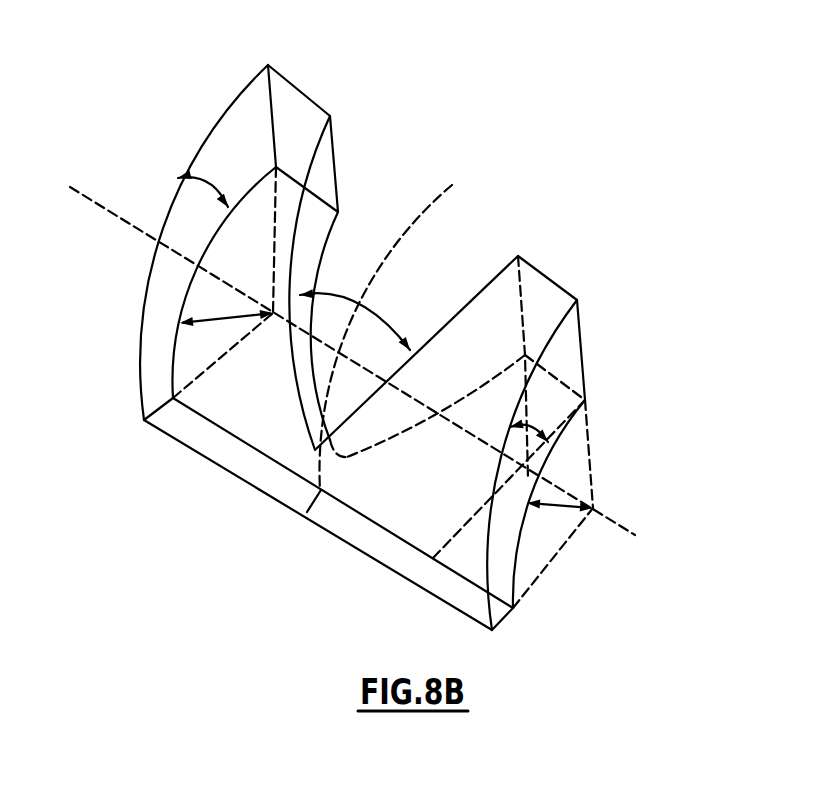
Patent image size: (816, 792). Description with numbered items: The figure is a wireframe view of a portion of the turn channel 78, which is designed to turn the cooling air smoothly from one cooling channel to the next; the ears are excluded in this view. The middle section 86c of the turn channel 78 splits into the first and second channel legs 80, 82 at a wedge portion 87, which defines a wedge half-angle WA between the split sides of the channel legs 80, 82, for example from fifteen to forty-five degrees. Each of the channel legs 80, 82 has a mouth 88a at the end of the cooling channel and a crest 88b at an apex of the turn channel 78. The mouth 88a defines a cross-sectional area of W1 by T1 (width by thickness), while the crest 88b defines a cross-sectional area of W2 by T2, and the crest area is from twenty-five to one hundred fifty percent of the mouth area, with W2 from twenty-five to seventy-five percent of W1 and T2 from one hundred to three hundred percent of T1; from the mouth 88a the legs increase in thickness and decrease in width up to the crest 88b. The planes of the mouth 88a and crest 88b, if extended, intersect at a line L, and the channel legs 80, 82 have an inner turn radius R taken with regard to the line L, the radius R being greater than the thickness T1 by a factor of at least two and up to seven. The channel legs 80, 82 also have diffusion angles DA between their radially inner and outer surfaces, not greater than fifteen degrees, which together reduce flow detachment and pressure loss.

The turn channel 78 is at (180, 104).
The first channel leg 80 is at (447, 298).
The second channel leg 82 is at (333, 248).
The middle section 86c is at (226, 481).
The wedge portion 87 is at (362, 463).
The mouth 88a is at (345, 522).
The crest 88b is at (323, 158).
The diffusion angle DA is at (205, 177).
The wedge half-angle WA is at (325, 293).
The inner turn radius R is at (217, 322).
The line L is at (605, 513).
The mouth width W1 is at (457, 612).
The crest width W2 is at (556, 285).
The mouth thickness T1 is at (503, 615).
The crest thickness T2 is at (584, 378).